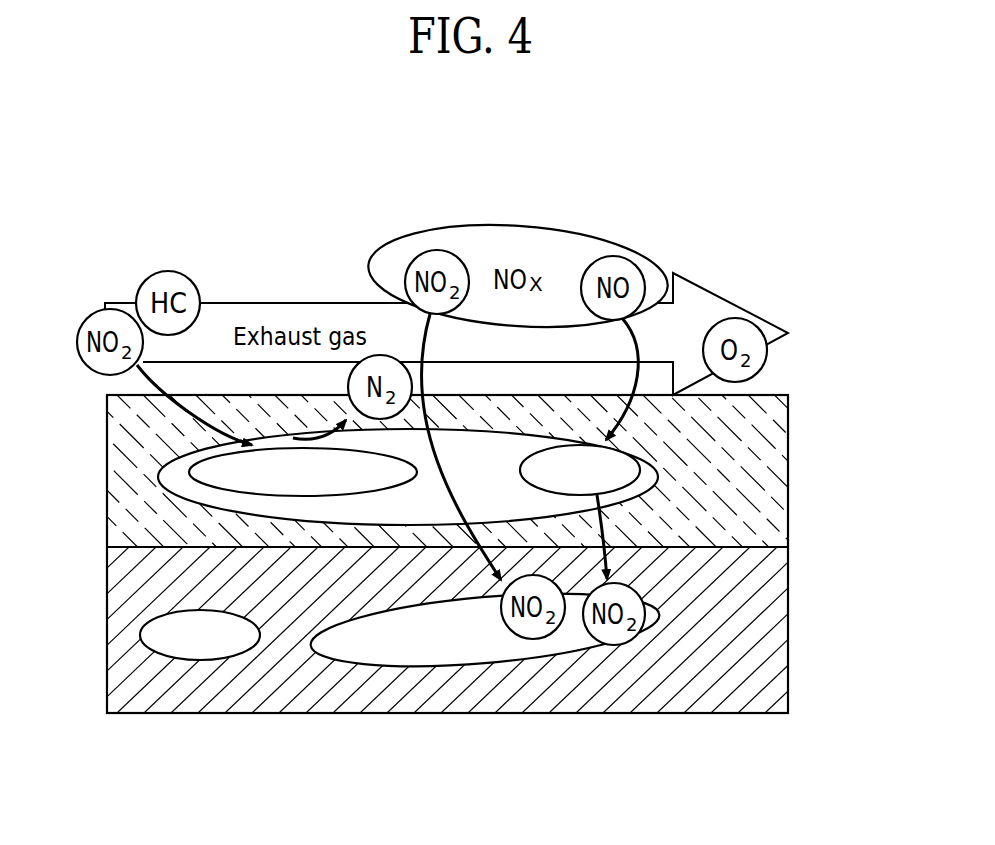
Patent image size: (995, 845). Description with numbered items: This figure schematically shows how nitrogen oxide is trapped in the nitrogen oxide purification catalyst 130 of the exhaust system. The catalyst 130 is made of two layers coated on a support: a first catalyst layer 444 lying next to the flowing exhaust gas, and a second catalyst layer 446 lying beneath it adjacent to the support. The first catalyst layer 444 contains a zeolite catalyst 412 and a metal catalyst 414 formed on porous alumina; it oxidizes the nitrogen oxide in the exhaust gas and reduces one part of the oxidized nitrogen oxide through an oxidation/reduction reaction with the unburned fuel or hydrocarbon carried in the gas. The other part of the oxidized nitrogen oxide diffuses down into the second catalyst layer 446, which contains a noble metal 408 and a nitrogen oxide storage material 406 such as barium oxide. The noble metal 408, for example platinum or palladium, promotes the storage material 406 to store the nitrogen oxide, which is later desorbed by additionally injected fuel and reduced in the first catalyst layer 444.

The nitrogen oxide purification catalyst 130 is at (806, 382).
The zeolite catalyst 412 is at (189, 472).
The metal catalyst 414 is at (643, 466).
The first catalyst layer 444 is at (745, 517).
The noble metal 408 is at (140, 637).
The nitrogen oxide storage material 406 is at (517, 660).
The second catalyst layer 446 is at (697, 677).